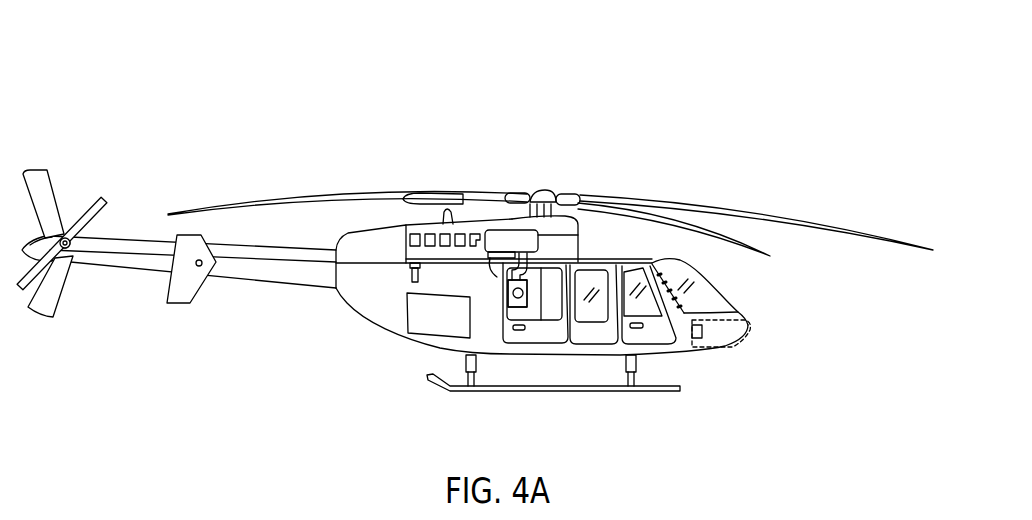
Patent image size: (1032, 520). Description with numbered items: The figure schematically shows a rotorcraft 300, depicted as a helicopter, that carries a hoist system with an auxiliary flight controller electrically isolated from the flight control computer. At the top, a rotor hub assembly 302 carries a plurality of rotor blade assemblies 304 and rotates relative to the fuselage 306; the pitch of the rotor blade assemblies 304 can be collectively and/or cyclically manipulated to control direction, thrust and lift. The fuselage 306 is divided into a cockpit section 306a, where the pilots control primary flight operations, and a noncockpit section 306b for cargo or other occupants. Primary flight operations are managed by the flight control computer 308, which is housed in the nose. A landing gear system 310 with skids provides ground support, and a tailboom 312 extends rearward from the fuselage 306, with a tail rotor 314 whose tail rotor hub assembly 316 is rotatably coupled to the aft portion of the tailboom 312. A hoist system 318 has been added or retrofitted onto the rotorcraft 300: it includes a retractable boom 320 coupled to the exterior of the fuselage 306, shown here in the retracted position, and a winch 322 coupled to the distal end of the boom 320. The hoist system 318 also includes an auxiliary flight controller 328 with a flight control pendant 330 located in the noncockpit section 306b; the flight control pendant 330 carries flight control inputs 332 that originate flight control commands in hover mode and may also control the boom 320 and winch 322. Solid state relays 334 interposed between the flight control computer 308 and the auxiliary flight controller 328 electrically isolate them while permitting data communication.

The rotorcraft 300 is at (355, 80).
The rotor hub assembly 302 is at (549, 182).
The rotor blade assemblies 304 is at (885, 237).
The fuselage 306 is at (363, 323).
The cockpit section 306a is at (702, 283).
The noncockpit section 306b is at (527, 287).
The flight control computer 308 is at (753, 323).
The landing gear system 310 is at (432, 381).
The tailboom 312 is at (240, 283).
The tail rotor 314 is at (91, 200).
The tail rotor hub assembly 316 is at (80, 262).
The hoist system 318 is at (497, 222).
The retractable boom 320 is at (530, 240).
The winch 322 is at (527, 227).
The auxiliary flight controller 328 is at (496, 296).
The flight control pendant 330 is at (528, 288).
The flight control inputs 332 is at (518, 307).
The solid state relays 334 is at (712, 336).